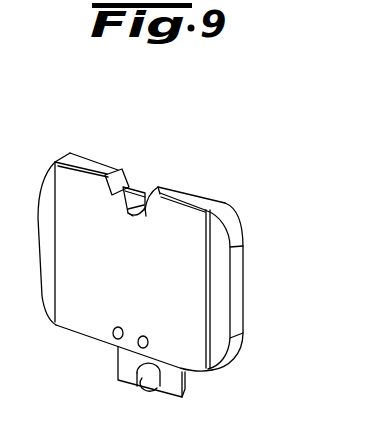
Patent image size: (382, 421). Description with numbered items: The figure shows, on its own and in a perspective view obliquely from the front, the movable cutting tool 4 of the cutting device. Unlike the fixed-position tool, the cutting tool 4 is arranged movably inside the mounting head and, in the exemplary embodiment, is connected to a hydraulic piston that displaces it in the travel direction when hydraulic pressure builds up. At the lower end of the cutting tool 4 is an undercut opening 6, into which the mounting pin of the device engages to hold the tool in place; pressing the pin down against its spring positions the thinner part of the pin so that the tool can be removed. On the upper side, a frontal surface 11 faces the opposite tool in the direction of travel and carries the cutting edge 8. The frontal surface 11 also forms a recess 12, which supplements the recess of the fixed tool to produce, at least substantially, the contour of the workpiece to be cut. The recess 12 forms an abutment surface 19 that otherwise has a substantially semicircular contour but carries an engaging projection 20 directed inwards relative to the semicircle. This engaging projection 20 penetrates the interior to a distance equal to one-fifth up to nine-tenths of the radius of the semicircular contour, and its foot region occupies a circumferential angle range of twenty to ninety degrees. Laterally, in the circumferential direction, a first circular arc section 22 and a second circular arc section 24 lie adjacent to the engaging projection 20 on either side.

The cutting tool 4 is at (101, 255).
The undercut opening 6 is at (119, 379).
The cutting edge 8 is at (133, 217).
The frontal surface 11 is at (93, 167).
The recess 12 is at (170, 167).
The abutment surface 19 is at (150, 190).
The engaging projection 20 is at (135, 191).
The first circular arc section 22 is at (118, 171).
The second circular arc section 24 is at (146, 217).